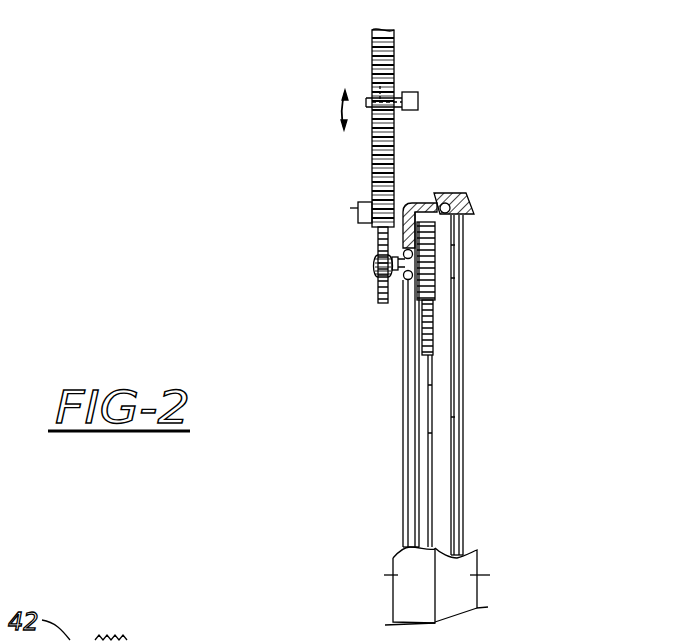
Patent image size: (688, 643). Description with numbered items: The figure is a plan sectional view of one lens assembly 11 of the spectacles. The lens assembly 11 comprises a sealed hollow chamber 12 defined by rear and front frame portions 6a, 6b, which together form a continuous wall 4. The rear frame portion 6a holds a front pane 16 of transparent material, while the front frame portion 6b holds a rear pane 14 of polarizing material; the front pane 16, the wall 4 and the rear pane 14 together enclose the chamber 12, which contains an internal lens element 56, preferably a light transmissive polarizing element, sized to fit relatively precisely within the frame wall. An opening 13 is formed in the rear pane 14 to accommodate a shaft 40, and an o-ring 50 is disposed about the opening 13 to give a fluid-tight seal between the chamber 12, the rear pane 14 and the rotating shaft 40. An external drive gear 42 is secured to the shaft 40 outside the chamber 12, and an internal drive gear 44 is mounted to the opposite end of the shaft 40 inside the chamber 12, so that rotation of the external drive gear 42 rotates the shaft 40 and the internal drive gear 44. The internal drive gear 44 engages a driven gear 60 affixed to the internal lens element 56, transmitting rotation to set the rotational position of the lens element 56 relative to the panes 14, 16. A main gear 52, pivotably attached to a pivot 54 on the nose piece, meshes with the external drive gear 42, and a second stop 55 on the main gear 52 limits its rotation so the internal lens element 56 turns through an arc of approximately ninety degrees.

The lens assembly 11 is at (190, 215).
The pivot 54 is at (378, 97).
The main gear 52 is at (375, 172).
The second stop 55 is at (358, 212).
The external drive gear 42 is at (380, 298).
The shaft 40 is at (375, 265).
The o-ring 50 is at (404, 254).
The opening 13 is at (404, 279).
The continuous wall 4 is at (450, 192).
The rear frame portion 6a is at (417, 203).
The front frame portion 6b is at (476, 193).
The front pane 16 is at (462, 420).
The internal lens element 56 is at (433, 503).
The sealed hollow chamber 12 is at (417, 405).
The rear pane 14 is at (403, 488).
The driven gear 60 is at (440, 307).
The internal drive gear 44 is at (440, 240).